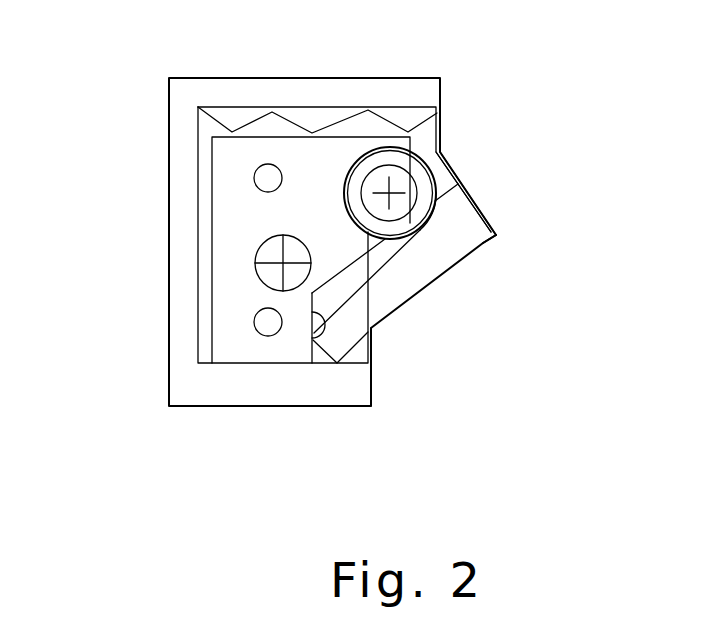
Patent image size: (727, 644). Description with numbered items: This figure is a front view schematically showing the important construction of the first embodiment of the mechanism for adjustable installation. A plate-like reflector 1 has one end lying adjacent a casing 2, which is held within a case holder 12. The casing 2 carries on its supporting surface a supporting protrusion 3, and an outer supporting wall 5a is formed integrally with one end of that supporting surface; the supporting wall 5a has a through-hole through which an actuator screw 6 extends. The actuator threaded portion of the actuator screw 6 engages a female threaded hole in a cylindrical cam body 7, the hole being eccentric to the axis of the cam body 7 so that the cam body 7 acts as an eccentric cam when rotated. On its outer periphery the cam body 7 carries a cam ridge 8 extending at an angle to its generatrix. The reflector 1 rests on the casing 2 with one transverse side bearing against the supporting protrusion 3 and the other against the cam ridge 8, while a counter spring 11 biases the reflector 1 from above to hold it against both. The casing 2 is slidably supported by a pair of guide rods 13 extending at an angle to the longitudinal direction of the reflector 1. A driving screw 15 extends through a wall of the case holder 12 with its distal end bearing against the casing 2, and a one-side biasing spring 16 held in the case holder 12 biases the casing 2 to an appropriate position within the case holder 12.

The reflector 1 is at (382, 300).
The casing 2 is at (222, 327).
The supporting protrusion 3 is at (373, 370).
The supporting wall 5a is at (233, 208).
The actuator screw 6 is at (403, 186).
The cylindrical cam body 7 is at (428, 197).
The cam ridge 8 is at (403, 235).
The counter spring 11 is at (493, 233).
The case holder 12 is at (173, 223).
The guide rods 13 is at (265, 177).
The driving screw 15 is at (265, 270).
The one-side biasing spring 16 is at (282, 115).